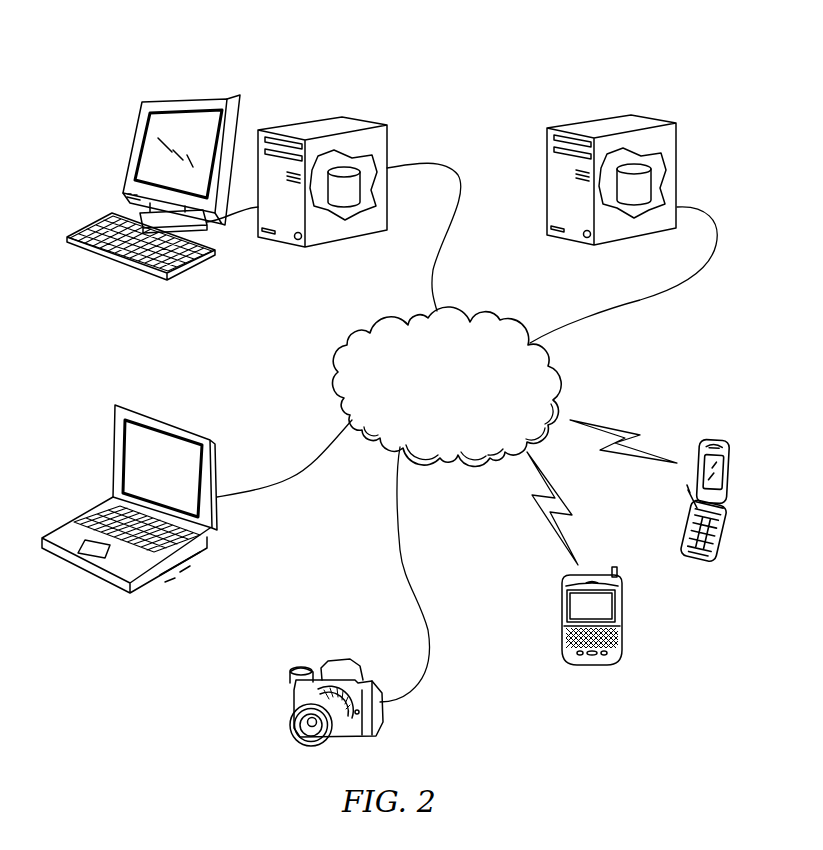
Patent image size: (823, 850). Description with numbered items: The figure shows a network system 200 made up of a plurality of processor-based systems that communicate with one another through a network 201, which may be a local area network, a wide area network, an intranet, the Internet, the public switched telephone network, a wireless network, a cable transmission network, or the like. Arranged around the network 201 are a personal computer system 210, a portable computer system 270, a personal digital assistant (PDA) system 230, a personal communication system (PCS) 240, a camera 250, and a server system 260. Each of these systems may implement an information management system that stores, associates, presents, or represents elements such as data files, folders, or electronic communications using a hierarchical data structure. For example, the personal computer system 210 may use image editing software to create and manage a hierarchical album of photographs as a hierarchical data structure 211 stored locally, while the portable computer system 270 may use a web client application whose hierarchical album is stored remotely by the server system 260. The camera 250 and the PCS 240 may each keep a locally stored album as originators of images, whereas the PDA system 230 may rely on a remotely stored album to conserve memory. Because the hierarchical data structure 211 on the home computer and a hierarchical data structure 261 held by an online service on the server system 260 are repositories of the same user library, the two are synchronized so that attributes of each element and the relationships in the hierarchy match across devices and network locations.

The network system 200 is at (208, 58).
The network 201 is at (463, 399).
The personal computer system 210 is at (341, 186).
The hierarchical data structure 211 is at (348, 207).
The personal digital assistant (PDA) system 230 is at (620, 617).
The personal communication system (PCS) 240 is at (700, 535).
The camera 250 is at (377, 722).
The server system 260 is at (645, 174).
The hierarchical data structure 261 is at (652, 186).
The laptop computer 270 is at (112, 443).